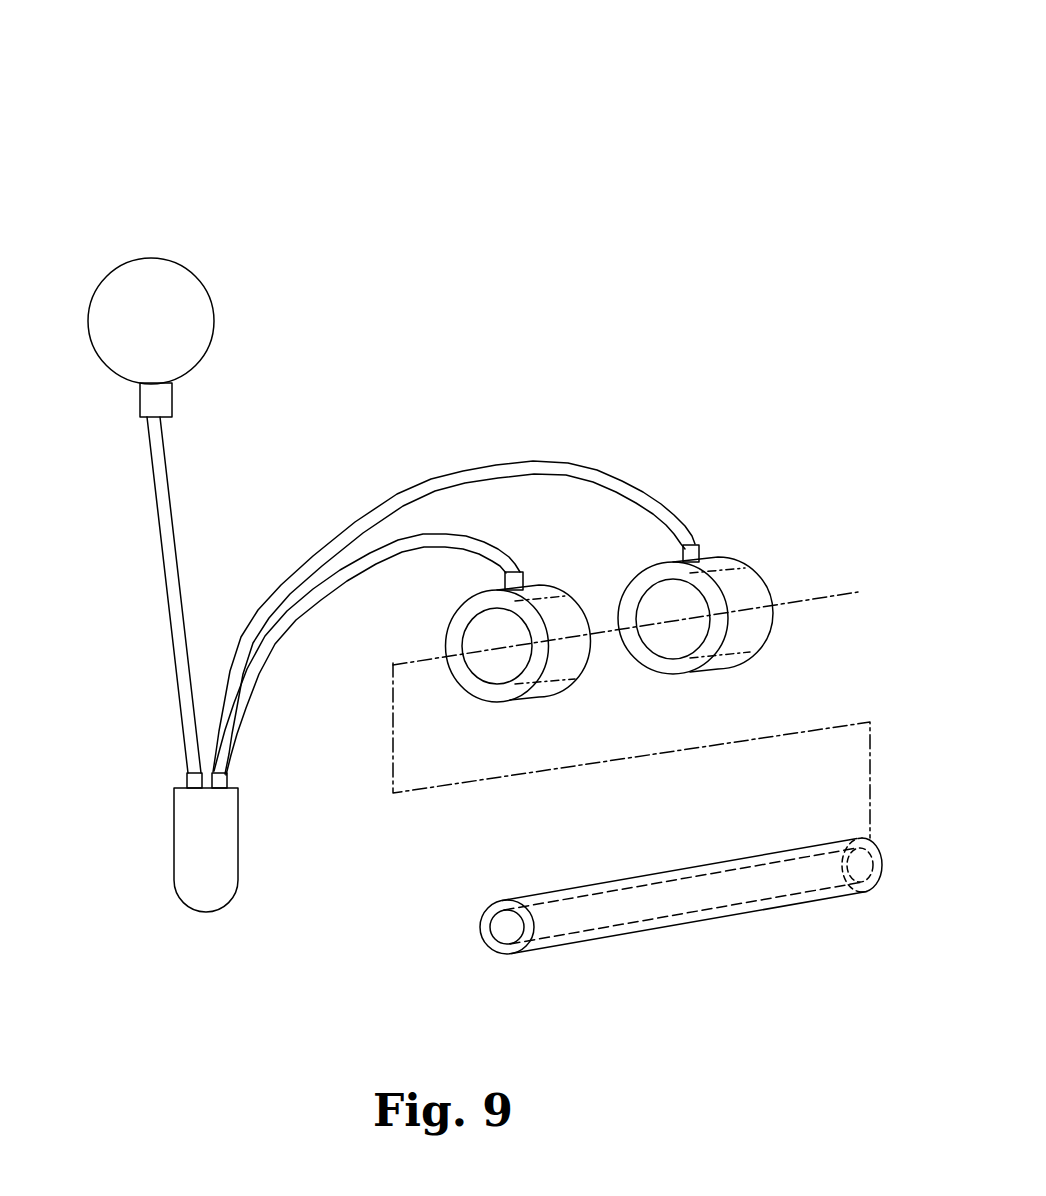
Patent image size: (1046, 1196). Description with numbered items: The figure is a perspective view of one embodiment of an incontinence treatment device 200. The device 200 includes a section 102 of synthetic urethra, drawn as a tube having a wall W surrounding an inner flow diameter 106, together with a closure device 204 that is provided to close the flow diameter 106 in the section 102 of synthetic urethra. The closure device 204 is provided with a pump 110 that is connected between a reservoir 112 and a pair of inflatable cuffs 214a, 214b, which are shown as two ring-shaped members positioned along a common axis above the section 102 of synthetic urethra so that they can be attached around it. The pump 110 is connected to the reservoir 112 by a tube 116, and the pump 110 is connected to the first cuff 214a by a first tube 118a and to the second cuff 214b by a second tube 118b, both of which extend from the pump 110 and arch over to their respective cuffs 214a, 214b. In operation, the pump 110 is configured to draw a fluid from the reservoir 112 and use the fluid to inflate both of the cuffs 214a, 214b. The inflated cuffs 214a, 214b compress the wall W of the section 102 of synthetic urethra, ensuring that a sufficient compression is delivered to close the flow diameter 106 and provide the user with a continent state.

The incontinence treatment device 200 is at (537, 137).
The closure device 204 is at (343, 415).
The reservoir 112 is at (176, 284).
The tube 116 is at (158, 503).
The pump 110 is at (193, 868).
The first tube 118a is at (372, 567).
The second tube 118b is at (452, 482).
The first cuff 214a is at (500, 690).
The second cuff 214b is at (745, 590).
The section of synthetic urethra 102 is at (680, 922).
The flow diameter 106 is at (503, 926).
The wall W is at (507, 955).